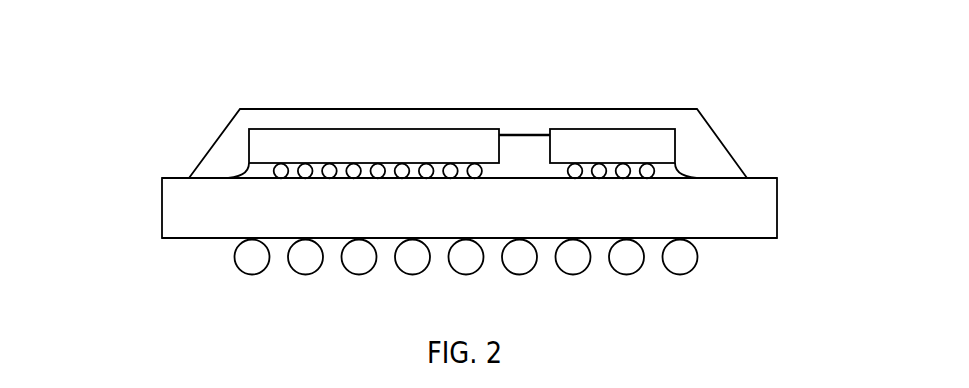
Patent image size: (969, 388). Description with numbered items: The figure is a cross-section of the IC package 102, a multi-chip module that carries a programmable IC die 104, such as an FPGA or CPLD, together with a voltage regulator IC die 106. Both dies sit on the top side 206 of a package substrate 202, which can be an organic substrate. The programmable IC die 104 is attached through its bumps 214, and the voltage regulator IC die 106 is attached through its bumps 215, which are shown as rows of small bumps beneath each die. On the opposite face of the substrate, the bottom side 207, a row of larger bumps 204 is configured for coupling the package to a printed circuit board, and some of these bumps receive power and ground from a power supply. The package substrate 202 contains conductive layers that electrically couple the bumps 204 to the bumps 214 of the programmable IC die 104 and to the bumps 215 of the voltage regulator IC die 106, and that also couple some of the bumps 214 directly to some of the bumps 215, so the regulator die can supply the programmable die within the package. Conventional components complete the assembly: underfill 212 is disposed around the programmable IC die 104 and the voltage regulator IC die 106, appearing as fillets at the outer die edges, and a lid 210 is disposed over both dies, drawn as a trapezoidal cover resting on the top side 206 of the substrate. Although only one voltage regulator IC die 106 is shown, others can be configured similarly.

The IC package 102 is at (172, 51).
The programmable IC die 104 is at (363, 129).
The voltage regulator IC die 106 is at (625, 129).
The package substrate 202 is at (162, 212).
The bumps 204 is at (697, 253).
The top side 206 is at (765, 178).
The bottom side 207 is at (766, 238).
The lid 210 is at (226, 129).
The underfill 212 is at (243, 170).
The bumps of the programmable IC die 214 is at (315, 178).
The bumps of the voltage regulator IC die 215 is at (573, 178).